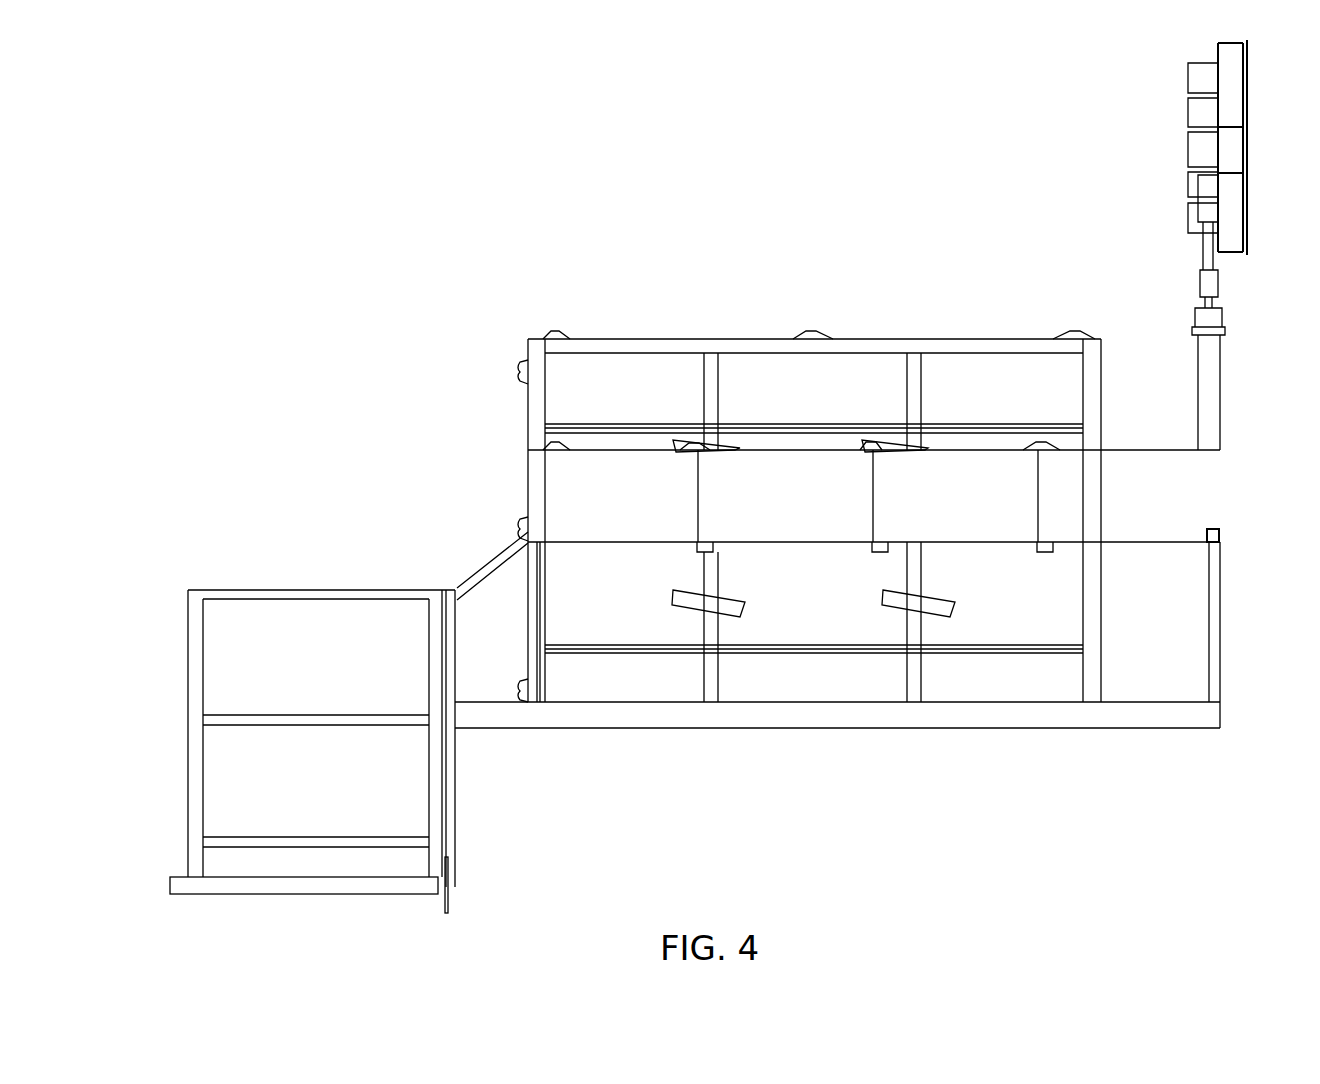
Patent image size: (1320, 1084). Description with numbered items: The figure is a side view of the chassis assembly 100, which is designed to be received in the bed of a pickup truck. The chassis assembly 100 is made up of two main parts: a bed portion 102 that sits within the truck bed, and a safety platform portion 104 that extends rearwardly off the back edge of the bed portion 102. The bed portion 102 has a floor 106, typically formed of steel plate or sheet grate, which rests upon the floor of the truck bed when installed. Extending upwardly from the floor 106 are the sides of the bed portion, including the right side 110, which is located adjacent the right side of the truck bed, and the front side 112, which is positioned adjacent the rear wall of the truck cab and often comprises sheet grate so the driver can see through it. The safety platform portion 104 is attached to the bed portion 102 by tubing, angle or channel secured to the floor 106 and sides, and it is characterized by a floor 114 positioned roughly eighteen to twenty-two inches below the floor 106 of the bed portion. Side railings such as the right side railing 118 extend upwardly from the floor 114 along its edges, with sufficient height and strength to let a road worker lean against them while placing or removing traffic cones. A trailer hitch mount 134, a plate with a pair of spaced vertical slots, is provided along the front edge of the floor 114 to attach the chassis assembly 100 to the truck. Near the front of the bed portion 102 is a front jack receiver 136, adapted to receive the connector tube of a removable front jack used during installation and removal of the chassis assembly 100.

The chassis assembly 100 is at (196, 186).
The bed portion 102 is at (815, 296).
The safety platform portion 104 is at (313, 484).
The floor 106 is at (823, 693).
The right side 110 is at (712, 677).
The front side 112 is at (1213, 595).
The floor 114 is at (284, 872).
The right side railing 118 is at (313, 720).
The trailer hitch mount 134 is at (450, 899).
The front jack receiver 136 is at (1222, 535).